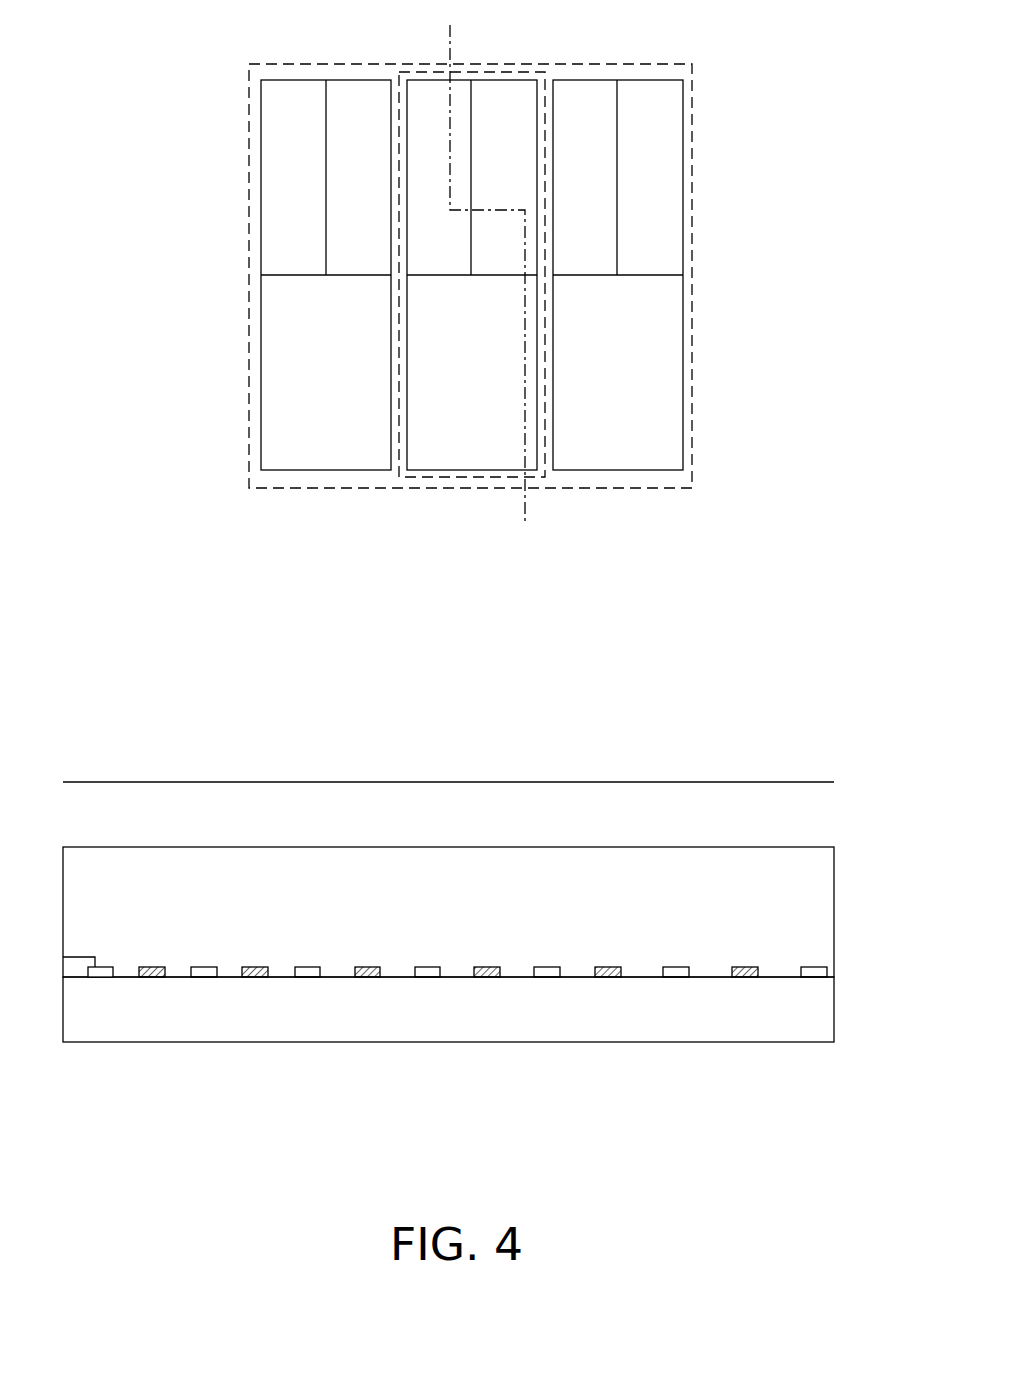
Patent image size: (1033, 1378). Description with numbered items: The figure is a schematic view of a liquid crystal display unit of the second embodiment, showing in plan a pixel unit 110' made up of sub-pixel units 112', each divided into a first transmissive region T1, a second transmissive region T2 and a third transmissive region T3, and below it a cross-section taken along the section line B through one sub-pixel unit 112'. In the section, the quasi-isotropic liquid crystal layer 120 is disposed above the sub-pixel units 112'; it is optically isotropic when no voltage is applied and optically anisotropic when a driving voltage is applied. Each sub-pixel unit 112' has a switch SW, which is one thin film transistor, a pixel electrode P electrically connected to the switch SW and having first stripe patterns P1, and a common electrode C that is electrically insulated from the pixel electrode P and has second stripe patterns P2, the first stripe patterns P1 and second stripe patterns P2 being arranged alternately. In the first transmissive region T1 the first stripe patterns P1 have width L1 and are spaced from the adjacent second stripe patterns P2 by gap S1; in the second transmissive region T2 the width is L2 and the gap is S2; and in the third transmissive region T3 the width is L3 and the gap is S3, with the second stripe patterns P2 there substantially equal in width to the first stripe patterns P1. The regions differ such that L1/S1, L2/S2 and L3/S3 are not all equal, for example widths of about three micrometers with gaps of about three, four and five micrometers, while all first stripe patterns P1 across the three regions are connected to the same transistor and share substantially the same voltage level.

The pixel unit 110' is at (476, 553).
The sub-pixel unit 112' is at (492, 313).
The quasi-isotropic liquid crystal layer 120 is at (843, 848).
The first transmissive region T1 is at (63, 1103).
The second transmissive region T2 is at (582, 1103).
The third transmissive region T3 is at (834, 1103).
The section line B-B' B is at (450, 25).
The switch SW is at (66, 969).
The pixel electrode P is at (182, 882).
The first stripe patterns P1 is at (101, 967).
The second stripe patterns P2 is at (367, 967).
The common electrode C is at (280, 1105).
The gap in first transmissive region S1 is at (113, 977).
The width of first stripe pattern in first transmissive region L1 is at (139, 977).
The gap in second transmissive region S2 is at (320, 977).
The width of first stripe pattern in second transmissive region L2 is at (355, 977).
The gap in third transmissive region S3 is at (620, 977).
The width of first stripe pattern in third transmissive region L3 is at (663, 977).